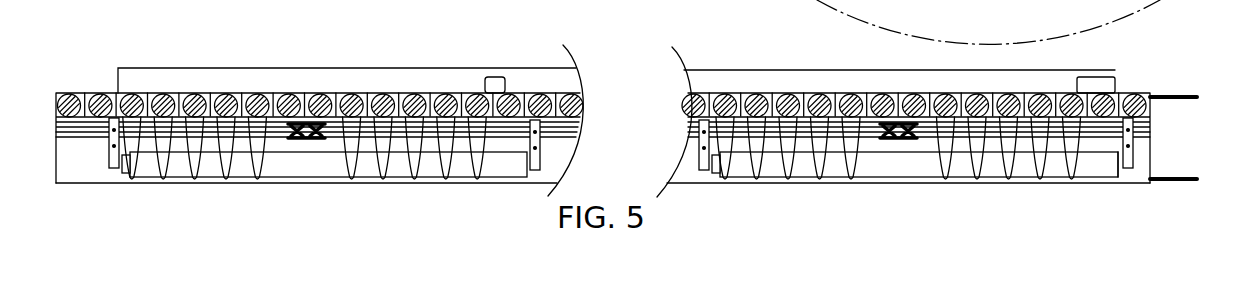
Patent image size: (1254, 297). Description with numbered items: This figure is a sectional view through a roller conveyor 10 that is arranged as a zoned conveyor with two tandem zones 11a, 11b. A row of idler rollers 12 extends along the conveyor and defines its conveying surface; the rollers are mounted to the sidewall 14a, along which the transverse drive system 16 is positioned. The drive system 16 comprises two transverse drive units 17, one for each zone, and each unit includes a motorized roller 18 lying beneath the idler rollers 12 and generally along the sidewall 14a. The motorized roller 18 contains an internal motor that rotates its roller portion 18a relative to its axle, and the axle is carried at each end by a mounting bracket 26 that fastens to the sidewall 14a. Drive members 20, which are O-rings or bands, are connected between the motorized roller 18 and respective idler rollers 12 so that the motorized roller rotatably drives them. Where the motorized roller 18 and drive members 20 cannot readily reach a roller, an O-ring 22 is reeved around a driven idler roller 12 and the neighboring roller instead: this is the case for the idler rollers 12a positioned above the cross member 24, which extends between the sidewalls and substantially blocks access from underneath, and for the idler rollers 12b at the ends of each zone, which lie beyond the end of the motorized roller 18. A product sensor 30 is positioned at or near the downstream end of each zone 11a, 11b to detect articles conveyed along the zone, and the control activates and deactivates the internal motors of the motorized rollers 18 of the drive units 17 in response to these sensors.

The roller conveyor 10 is at (378, 34).
The zone 11a is at (437, 61).
The zone 11b is at (1090, 61).
The idler roller 12 is at (193, 100).
The idler roller 12a is at (912, 96).
The idler roller 12b is at (103, 94).
The sidewall 14a is at (92, 170).
The transverse drive system 16 is at (503, 186).
The transverse drive unit 17 is at (216, 191).
The motorized roller 18 is at (305, 167).
The roller portion 18a is at (1092, 180).
The drive member 20 is at (285, 143).
The O-ring 22 is at (112, 92).
The cross member 24 is at (318, 140).
The mounting bracket 26 is at (546, 152).
The product sensor 30 is at (493, 77).